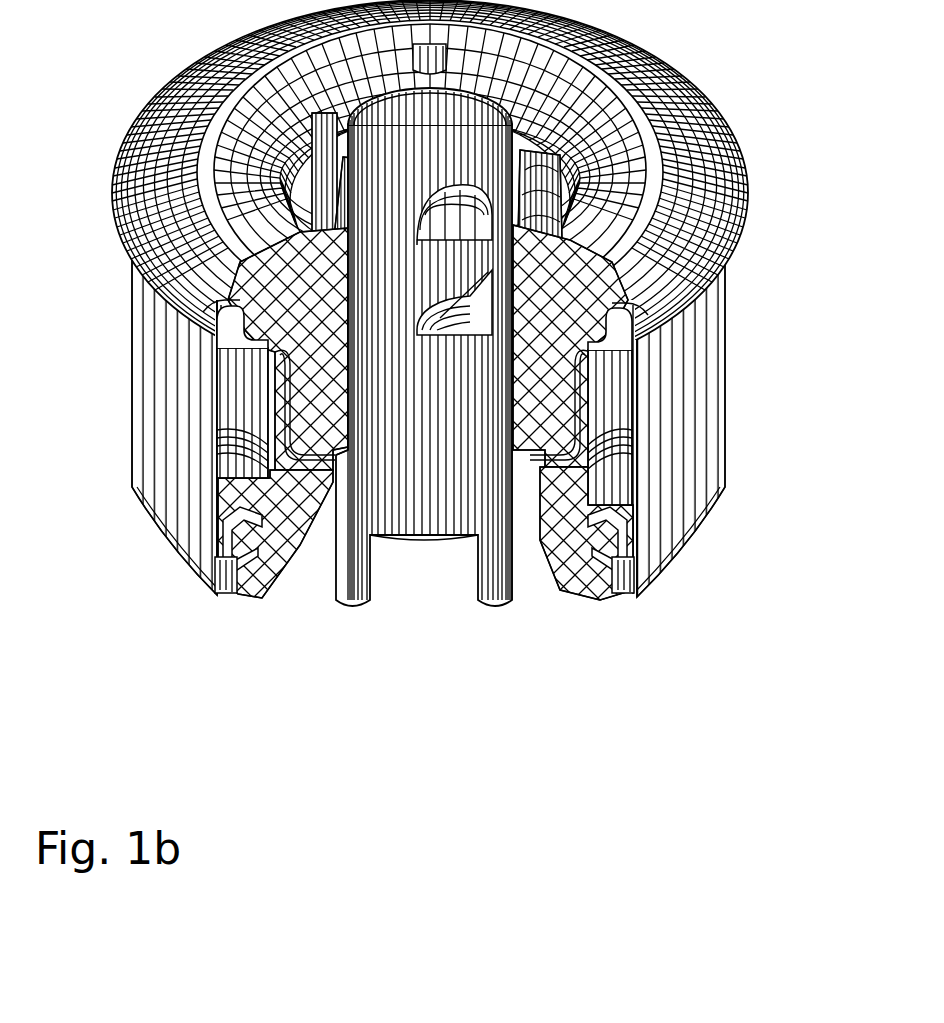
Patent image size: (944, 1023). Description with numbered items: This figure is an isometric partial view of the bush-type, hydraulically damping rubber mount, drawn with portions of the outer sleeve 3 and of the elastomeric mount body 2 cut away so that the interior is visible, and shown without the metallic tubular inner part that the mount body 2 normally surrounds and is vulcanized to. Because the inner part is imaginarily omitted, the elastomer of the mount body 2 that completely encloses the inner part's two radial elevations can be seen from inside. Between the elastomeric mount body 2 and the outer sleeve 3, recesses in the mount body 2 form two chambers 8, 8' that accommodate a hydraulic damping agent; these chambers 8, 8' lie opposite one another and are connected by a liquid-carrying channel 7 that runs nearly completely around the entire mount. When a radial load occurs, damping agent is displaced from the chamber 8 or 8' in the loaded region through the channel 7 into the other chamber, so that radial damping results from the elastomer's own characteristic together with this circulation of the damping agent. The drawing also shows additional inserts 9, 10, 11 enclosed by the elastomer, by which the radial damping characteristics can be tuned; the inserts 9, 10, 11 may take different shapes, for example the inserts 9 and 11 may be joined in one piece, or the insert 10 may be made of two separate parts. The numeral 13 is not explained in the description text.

The elastomeric mount body 2 is at (210, 188).
The outer sleeve 3 is at (695, 446).
The liquid-carrying channel 7 is at (622, 536).
The chamber 8 is at (721, 457).
The chamber 8' is at (160, 418).
The insert 9 is at (632, 318).
The insert 10 is at (285, 342).
The insert 11 is at (232, 565).
The inner tubular stub 13 is at (535, 222).